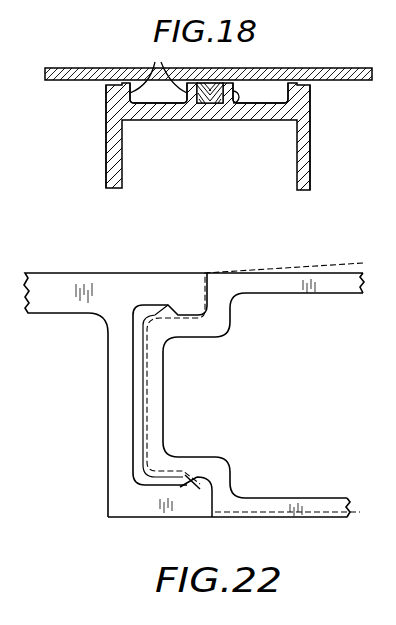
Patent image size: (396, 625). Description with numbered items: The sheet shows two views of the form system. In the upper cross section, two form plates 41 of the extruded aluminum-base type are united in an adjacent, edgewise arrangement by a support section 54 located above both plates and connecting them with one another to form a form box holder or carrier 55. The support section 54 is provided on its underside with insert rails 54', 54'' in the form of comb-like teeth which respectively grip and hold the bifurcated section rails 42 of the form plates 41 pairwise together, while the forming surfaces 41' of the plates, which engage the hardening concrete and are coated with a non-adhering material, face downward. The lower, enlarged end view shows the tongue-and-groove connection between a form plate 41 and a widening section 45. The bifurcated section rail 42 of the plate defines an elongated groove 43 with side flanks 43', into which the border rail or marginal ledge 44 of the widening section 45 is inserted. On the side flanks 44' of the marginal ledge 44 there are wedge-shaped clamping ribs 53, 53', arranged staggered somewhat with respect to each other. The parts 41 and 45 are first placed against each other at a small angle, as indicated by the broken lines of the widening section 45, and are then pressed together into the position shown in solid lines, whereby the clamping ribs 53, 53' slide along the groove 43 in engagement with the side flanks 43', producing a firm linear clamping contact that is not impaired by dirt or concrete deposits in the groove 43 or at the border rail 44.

In FIG. 18, the form panel 41 is at (208, 137).
In FIG. 22, the form panel 41 is at (118, 387).
In FIG. 18, the forming surface 41' is at (207, 137).
In FIG. 18, the bifurcated section rail 42 is at (153, 118).
In FIG. 22, the elongated groove 43 is at (98, 418).
In FIG. 22, the side flank of groove 43' is at (160, 511).
In FIG. 22, the border rail 44 is at (196, 397).
In FIG. 22, the side flank of border rail 44' is at (196, 397).
In FIG. 22, the widening section 45 is at (263, 395).
In FIG. 22, the wedge-shaped clamping rib 53 is at (253, 379).
In FIG. 22, the wedge-shaped clamping rib 53' is at (192, 512).
In FIG. 18, the support section 54 is at (208, 62).
In FIG. 18, the insert rail 54' is at (158, 69).
In FIG. 18, the insert rail 54'' is at (253, 119).
In FIG. 18, the form box holder 55 is at (194, 119).